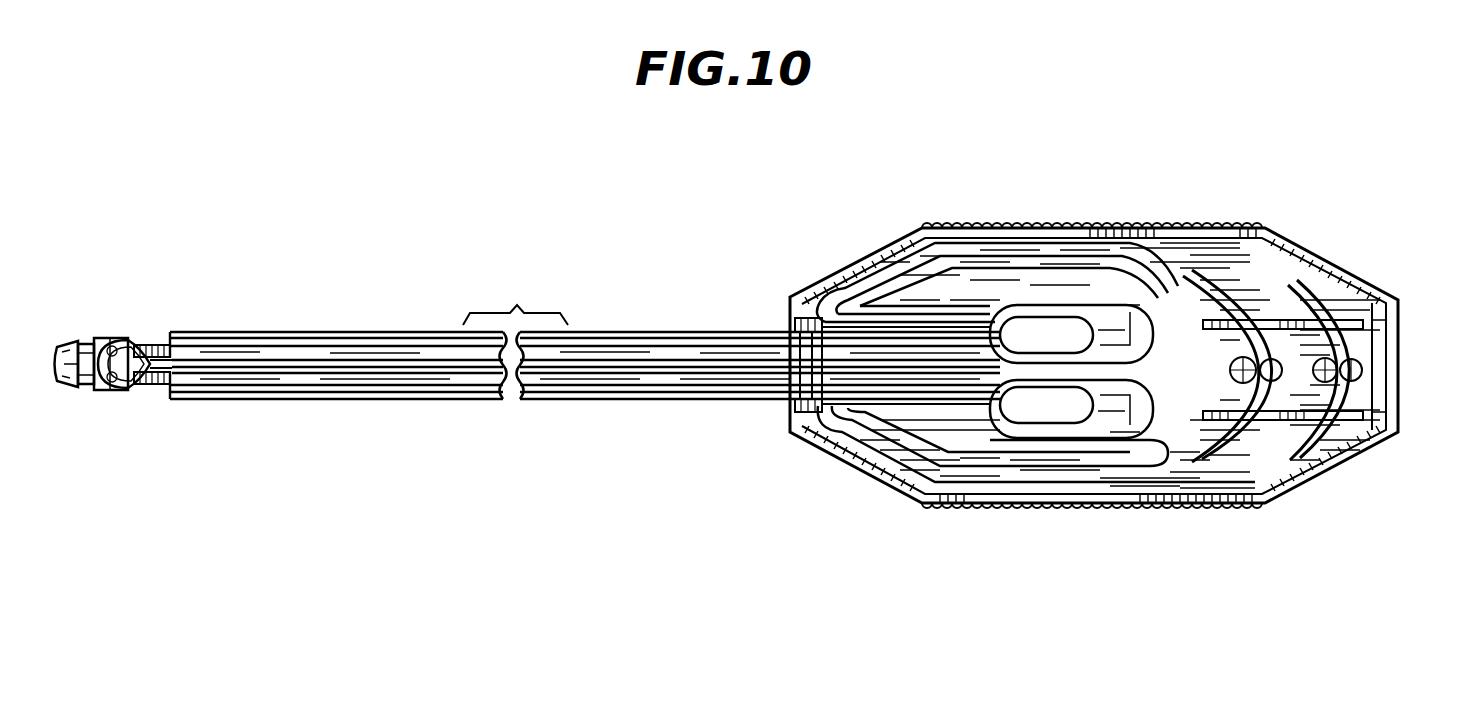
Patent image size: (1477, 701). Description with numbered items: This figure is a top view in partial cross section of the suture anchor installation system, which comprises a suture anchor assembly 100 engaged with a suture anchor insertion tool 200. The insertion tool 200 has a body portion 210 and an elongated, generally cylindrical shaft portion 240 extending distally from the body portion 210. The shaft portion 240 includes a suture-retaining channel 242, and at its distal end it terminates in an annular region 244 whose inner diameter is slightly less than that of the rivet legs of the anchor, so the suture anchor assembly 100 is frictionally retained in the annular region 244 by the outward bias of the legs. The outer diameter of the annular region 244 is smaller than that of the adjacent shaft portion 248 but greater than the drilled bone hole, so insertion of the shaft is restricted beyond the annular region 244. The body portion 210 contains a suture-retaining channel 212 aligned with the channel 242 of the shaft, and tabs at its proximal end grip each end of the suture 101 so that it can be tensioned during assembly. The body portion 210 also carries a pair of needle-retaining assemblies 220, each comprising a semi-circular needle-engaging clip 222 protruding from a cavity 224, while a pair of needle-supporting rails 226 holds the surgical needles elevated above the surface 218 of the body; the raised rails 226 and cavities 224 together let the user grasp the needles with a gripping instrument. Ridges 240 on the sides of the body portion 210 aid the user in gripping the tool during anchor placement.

The suture anchor assembly 100 is at (142, 289).
The suture 101 is at (141, 339).
The suture anchor insertion tool 200 is at (925, 365).
The body portion 210 is at (1058, 228).
The suture-retaining channel 212 is at (863, 393).
The surface 218 is at (1175, 300).
The needle-retaining assemblies 220 is at (1264, 308).
The needle-engaging clips 222 is at (1335, 328).
The cavities 224 is at (1290, 335).
The needle-supporting rails 226 is at (1378, 410).
The shaft portion 240 is at (447, 346).
The suture-retaining channel 242 is at (343, 366).
The annular region 244 is at (155, 389).
The shaft portion 248 is at (233, 346).